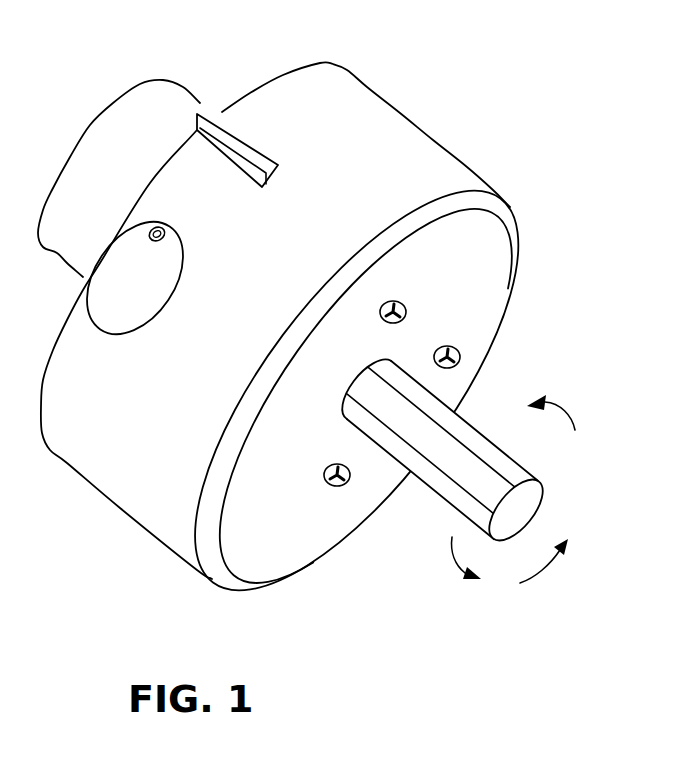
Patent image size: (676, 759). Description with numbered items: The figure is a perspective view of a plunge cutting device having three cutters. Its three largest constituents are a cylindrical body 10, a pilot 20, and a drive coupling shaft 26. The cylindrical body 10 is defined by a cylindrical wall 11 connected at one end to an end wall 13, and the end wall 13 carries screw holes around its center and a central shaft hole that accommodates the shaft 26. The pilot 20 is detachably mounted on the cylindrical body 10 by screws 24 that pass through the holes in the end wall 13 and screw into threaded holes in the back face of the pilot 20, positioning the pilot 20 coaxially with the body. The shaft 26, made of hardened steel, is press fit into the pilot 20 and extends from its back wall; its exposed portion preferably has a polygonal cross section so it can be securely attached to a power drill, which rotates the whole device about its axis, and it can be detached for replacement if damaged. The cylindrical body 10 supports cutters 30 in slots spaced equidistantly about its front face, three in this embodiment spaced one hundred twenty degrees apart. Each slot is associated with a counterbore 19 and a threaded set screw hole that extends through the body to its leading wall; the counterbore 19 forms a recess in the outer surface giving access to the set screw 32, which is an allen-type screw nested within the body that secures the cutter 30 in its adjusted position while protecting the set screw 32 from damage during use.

The cylindrical body 10 is at (299, 322).
The cylindrical wall 11 is at (445, 150).
The end wall 13 is at (400, 396).
The counterbore 19 is at (103, 310).
The pilot 20 is at (190, 92).
The screws 24 is at (349, 487).
The drive coupling shaft 26 is at (528, 472).
The cutter 30 is at (237, 132).
The set screw 32 is at (150, 237).